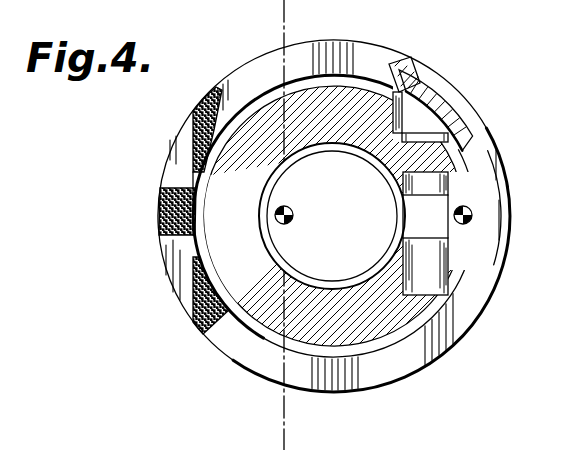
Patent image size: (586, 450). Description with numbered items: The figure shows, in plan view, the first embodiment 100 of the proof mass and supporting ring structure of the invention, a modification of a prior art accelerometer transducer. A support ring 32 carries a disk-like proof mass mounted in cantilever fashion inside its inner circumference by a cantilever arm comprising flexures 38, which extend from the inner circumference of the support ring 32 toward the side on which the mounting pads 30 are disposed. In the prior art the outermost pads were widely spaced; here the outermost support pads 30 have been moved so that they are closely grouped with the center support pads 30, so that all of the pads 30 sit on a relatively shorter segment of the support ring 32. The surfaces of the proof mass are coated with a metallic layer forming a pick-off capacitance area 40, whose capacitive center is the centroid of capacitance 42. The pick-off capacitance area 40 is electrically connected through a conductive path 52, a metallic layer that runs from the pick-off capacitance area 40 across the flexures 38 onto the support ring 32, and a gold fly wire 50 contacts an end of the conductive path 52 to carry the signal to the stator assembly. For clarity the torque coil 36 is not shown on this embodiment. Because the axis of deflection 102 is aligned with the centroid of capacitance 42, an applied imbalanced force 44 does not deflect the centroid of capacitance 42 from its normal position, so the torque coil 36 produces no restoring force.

The pads 30 is at (193, 119).
The support ring 32 is at (362, 368).
The torque coil 36 is at (398, 207).
The flexures 38 is at (432, 186).
The pick-off capacitance area 40 is at (334, 216).
The centroid of capacitance 42 is at (293, 208).
The imbalanced force 44 is at (473, 215).
The gold fly wire 50 is at (407, 70).
The conductive path 52 is at (448, 112).
The first embodiment 100 is at (150, 258).
The axis of deflection 102 is at (282, 396).